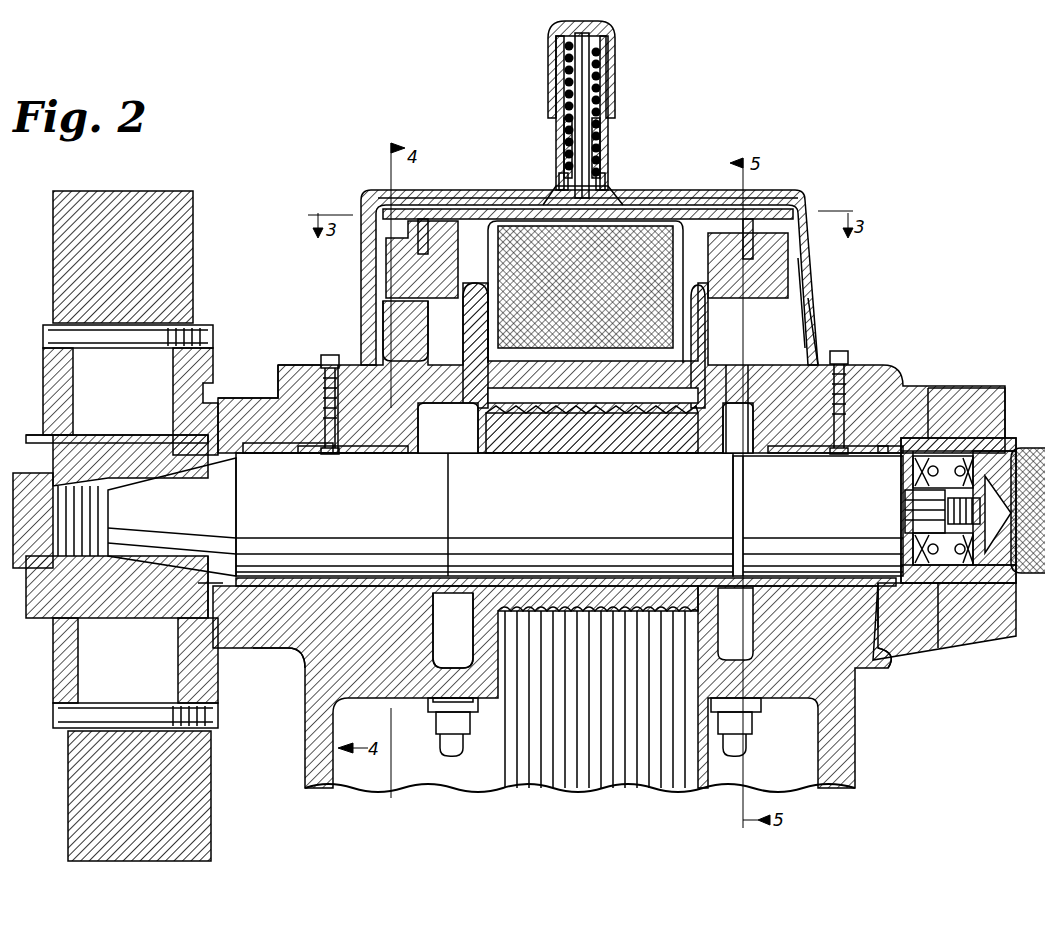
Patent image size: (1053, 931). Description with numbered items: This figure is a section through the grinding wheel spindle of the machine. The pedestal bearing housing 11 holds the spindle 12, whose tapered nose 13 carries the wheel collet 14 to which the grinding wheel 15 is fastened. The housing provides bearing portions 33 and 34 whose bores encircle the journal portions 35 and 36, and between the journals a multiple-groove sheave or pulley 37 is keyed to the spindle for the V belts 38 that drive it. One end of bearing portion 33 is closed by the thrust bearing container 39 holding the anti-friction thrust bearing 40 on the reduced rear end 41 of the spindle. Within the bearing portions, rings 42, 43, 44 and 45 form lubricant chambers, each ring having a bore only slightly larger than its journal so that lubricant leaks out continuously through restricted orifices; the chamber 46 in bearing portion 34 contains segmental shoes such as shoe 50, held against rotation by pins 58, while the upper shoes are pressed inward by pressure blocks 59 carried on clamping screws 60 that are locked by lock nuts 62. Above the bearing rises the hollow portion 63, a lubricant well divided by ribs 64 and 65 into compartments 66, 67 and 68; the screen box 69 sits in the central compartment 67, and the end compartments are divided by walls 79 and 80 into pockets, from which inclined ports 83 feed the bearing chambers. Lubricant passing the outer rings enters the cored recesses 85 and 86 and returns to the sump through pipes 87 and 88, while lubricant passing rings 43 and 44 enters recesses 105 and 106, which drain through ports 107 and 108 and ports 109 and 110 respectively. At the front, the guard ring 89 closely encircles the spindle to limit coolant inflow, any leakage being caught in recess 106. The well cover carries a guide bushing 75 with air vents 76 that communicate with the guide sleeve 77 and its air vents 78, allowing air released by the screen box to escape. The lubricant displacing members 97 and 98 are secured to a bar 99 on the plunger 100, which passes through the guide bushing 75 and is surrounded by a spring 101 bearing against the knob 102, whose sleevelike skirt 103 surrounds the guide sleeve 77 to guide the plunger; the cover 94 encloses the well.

The pedestal bearing housing 11 is at (870, 370).
The spindle 12 is at (870, 650).
The tapered nose 13 is at (175, 500).
The wheel collet 14 is at (40, 600).
The grinding wheel 15 is at (190, 778).
The bearing portion 33 is at (920, 380).
The bearing portion 34 is at (283, 340).
The journal portion 35 is at (745, 490).
The journal portion 36 is at (425, 503).
The sheave or pulley 37 is at (630, 438).
The multiple V belts 38 is at (688, 780).
The thrust bearing container 39 is at (985, 380).
The anti-friction thrust bearing 40 is at (985, 425).
The reduced rear end 41 is at (897, 505).
The ring 42 is at (752, 447).
The ring 43 is at (882, 447).
The ring 44 is at (240, 450).
The ring 45 is at (420, 447).
The chamber 46 is at (435, 660).
The segmental shoe 50 is at (310, 450).
The pin 58 is at (290, 648).
The pressure block 59 is at (298, 447).
The clamping screw 60 is at (322, 347).
The lock nut 62 is at (313, 352).
The hollow portion 63 is at (800, 290).
The rib 64 is at (480, 265).
The rib 65 is at (684, 280).
The compartment 66 is at (795, 310).
The compartment 67 is at (672, 205).
The compartment 68 is at (370, 316).
The screen box 69 is at (490, 230).
The guide bushing 75 is at (597, 172).
The air vent 76 is at (551, 173).
The guide sleeve 77 is at (595, 128).
The air vent 78 is at (596, 148).
The wall 79 is at (735, 345).
The wall 80 is at (375, 292).
The inclined port 83 is at (395, 360).
The cored recess 85 is at (750, 685).
The cored recess 86 is at (428, 705).
The pipe 87 is at (740, 740).
The pipe 88 is at (438, 748).
The guard ring 89 is at (185, 432).
The cover 94 is at (785, 195).
The lubricant displacing member 97 is at (780, 252).
The lubricant displacing member 98 is at (378, 250).
The bar 99 is at (485, 192).
The plunger 100 is at (567, 97).
The spring 101 is at (600, 82).
The knob 102 is at (607, 45).
The sleevelike skirt 103 is at (556, 78).
The recess 105 is at (960, 382).
The recess 106 is at (262, 356).
The port 107 is at (925, 635).
The port 108 is at (925, 645).
The port 109 is at (200, 595).
The port 110 is at (212, 585).